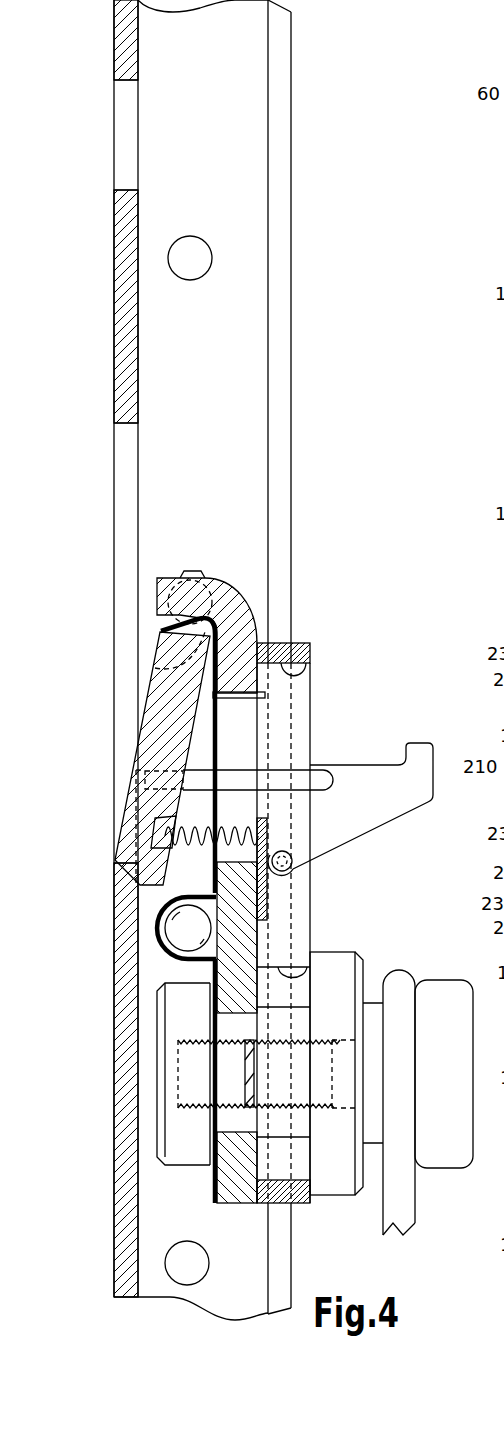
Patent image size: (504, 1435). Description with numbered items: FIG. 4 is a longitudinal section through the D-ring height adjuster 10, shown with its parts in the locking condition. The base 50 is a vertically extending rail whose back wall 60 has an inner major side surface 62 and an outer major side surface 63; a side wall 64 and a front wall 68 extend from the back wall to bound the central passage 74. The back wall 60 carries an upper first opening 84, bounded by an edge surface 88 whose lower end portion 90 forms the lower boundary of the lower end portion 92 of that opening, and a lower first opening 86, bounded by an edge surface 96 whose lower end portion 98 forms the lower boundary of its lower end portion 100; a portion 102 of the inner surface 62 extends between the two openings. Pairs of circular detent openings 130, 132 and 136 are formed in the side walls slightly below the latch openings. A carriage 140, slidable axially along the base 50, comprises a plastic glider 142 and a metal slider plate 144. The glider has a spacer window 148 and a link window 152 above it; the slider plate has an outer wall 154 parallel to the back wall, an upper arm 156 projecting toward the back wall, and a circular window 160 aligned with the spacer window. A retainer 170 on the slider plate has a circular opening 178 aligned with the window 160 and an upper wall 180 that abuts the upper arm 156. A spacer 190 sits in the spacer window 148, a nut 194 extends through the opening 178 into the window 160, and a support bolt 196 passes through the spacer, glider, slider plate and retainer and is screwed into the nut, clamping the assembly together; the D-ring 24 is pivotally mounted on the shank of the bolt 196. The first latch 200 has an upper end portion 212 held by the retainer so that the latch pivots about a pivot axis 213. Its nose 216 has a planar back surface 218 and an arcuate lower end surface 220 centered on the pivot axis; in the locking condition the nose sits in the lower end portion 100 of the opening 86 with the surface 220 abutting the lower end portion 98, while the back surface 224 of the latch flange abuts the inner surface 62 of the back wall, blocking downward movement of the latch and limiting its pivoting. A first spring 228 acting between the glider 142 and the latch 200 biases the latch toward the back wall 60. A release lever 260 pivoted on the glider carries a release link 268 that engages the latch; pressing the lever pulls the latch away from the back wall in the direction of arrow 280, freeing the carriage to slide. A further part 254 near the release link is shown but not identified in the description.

The D-ring height adjuster 10 is at (338, 92).
The D-ring 24 is at (396, 1232).
The base 50 is at (298, 150).
The back wall 60 is at (135, 648).
The inner major side surface 62 is at (138, 45).
The outer major side surface 63 is at (114, 43).
The side wall 64 is at (300, 657).
The front wall 68 is at (280, 337).
The central passage 74 is at (253, 435).
The upper first opening 84 is at (128, 132).
The lower first opening 86 is at (126, 447).
The edge surface 88 is at (128, 82).
The lower end portion of edge surface 90 is at (125, 190).
The lower end portion of upper first opening 92 is at (125, 160).
The edge surface 96 is at (128, 424).
The lower end portion of edge surface 98 is at (128, 853).
The lower end portion of lower first opening 100 is at (125, 730).
The portion of inner major side surface 102 is at (138, 343).
The detent openings 130 is at (212, 258).
The detent openings 132 is at (193, 571).
The detent openings 136 is at (209, 1258).
The carriage 140 is at (412, 596).
The glider 142 is at (315, 633).
The slider plate 144 is at (209, 605).
The spacer window 148 is at (318, 914).
The link window 152 is at (300, 672).
The outer wall 154 is at (227, 1160).
The upper arm 156 is at (187, 571).
The circular window 160 is at (145, 1103).
The retainer 170 is at (204, 996).
The circular opening 178 is at (213, 1132).
The upper wall 180 is at (160, 628).
The spacer 190 is at (394, 1082).
The nut 194 is at (191, 1163).
The support bolt 196 is at (445, 1168).
The first latch 200 is at (131, 727).
The upper end portion 212 is at (165, 640).
The pivot axis 213 is at (155, 668).
The nose 216 is at (130, 834).
The back surface 218 is at (133, 790).
The lower end surface 220 is at (135, 1049).
The back surface 224 is at (165, 940).
The first spring 228 is at (228, 832).
The pivot pin 254 is at (193, 925).
The release lever 260 is at (313, 809).
The release link 268 is at (280, 770).
The arrow 280 is at (228, 516).